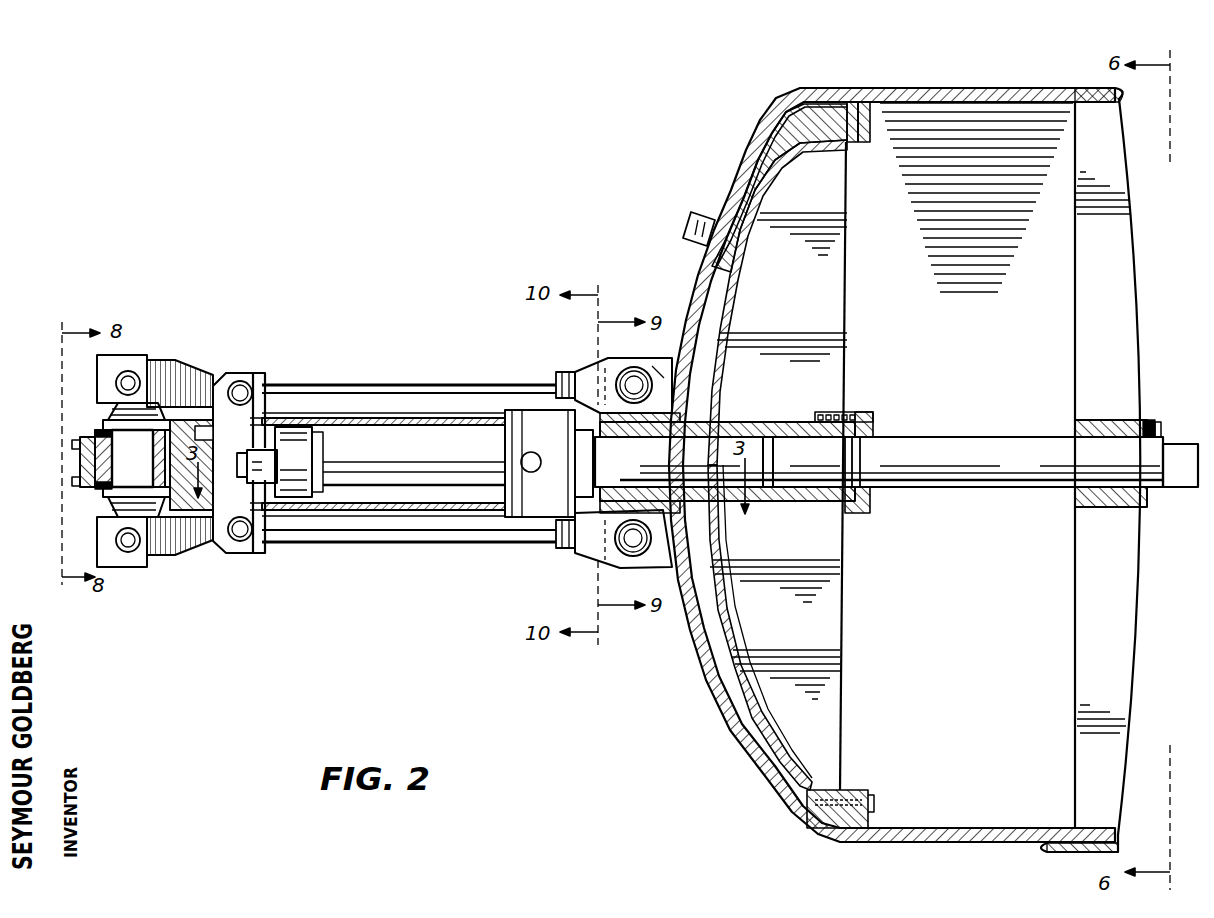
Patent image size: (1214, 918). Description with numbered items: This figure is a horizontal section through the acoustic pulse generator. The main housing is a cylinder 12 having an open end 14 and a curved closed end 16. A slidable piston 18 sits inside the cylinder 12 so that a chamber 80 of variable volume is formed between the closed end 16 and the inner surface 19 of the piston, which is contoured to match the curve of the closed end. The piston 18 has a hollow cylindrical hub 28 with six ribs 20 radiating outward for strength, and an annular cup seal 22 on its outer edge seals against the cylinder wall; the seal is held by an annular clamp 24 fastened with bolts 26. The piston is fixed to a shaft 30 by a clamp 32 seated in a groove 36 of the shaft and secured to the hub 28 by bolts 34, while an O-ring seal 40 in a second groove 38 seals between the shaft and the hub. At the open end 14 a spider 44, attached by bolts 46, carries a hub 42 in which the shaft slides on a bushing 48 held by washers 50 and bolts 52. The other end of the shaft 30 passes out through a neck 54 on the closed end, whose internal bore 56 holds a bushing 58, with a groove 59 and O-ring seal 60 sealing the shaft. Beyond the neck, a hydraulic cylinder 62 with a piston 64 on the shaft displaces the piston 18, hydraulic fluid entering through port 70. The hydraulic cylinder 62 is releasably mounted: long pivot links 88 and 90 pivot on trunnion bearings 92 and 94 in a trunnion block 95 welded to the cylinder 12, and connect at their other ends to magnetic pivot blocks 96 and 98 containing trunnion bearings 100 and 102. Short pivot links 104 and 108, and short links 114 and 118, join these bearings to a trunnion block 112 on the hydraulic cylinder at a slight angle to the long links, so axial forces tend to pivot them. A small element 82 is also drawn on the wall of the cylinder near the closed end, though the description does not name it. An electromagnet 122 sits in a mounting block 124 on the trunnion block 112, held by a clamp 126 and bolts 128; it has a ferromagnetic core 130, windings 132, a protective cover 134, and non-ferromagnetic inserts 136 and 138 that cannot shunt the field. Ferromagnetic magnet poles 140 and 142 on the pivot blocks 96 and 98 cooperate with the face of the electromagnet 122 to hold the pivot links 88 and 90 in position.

The cylinder 12 is at (800, 88).
The open end 14 is at (1066, 86).
The closed end 16 is at (766, 135).
The piston 18 is at (702, 294).
The inner surface 19 is at (733, 672).
The ribs 20 is at (848, 300).
The cup seal 22 is at (872, 110).
The clamp 24 is at (876, 143).
The bolts 26 is at (876, 800).
The hub 28 is at (735, 420).
The shaft 30 is at (928, 442).
The clamp 32 is at (866, 513).
The bolts 34 is at (878, 412).
The groove 36 is at (880, 490).
The second groove 38 is at (770, 490).
The O-ring seal 40 is at (778, 422).
The hub 42 is at (1085, 425).
The spider 44 is at (1135, 287).
The bolts 46 is at (1122, 838).
The bushing 48 is at (1164, 443).
The washers 50 is at (1150, 418).
The bolts 52 is at (1160, 422).
The neck 54 is at (570, 548).
The internal bore 56 is at (665, 513).
The bushing 58 is at (595, 548).
The groove 59 is at (588, 372).
The O-ring seal 60 is at (605, 372).
The hydraulic cylinder 62 is at (392, 418).
The piston 64 is at (298, 440).
The port 70 is at (528, 470).
The chamber 80 is at (794, 110).
The liner clip 82 is at (692, 236).
The pivot link 88 is at (388, 543).
The pivot link 90 is at (468, 385).
The trunnion bearing 92 is at (636, 545).
The trunnion bearing 94 is at (634, 385).
The trunnion block 95 is at (660, 368).
The magnetic pivot block 96 is at (147, 568).
The magnetic pivot block 98 is at (150, 372).
The trunnion bearing 100 is at (150, 560).
The trunnion bearing 102 is at (130, 376).
The short pivot link 104 is at (222, 555).
The short pivot link 108 is at (212, 382).
The trunnion block 112 is at (240, 463).
The short link 114 is at (260, 553).
The short link 118 is at (246, 392).
The electromagnet 122 is at (95, 490).
The mounting block 124 is at (192, 442).
The clamp 126 is at (78, 440).
The bolts 128 is at (82, 462).
The core 130 is at (136, 460).
The windings 132 is at (72, 480).
The protective cover 134 is at (82, 437).
The protective annular insert 136 is at (100, 500).
The protective annular insert 138 is at (112, 428).
The magnet pole 140 is at (124, 552).
The magnet pole 142 is at (100, 430).